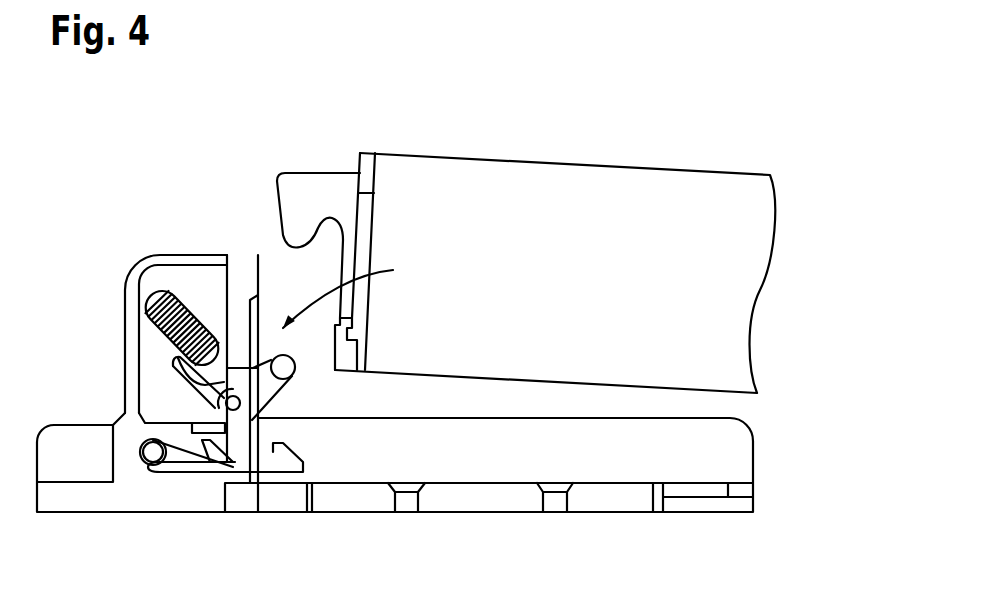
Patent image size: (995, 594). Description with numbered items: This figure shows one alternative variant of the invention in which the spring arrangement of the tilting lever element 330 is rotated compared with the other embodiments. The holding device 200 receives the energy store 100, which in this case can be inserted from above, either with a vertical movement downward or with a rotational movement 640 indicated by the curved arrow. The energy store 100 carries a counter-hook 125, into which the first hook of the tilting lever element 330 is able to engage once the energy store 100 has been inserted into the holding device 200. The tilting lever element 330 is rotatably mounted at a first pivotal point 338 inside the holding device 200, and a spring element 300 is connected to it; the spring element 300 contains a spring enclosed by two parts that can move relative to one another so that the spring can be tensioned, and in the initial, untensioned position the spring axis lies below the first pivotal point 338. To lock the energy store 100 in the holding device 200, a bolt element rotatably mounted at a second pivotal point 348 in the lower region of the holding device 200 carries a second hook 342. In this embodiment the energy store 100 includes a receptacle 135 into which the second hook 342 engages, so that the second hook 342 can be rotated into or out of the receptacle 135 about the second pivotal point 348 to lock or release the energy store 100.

The energy store 100 is at (565, 155).
The counter-hook 125 is at (303, 185).
The receptacle 135 is at (348, 357).
The holding device 200 is at (120, 330).
The spring element 300 is at (197, 300).
The tilting lever element 330 is at (277, 368).
The first pivotal point 338 is at (233, 403).
The second hook 342 is at (286, 462).
The second pivotal point 348 is at (153, 452).
The rotational movement 640 is at (305, 300).